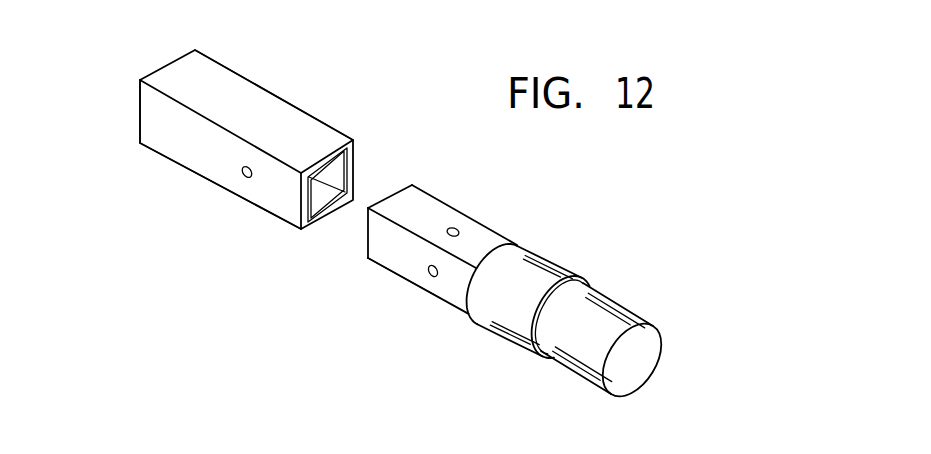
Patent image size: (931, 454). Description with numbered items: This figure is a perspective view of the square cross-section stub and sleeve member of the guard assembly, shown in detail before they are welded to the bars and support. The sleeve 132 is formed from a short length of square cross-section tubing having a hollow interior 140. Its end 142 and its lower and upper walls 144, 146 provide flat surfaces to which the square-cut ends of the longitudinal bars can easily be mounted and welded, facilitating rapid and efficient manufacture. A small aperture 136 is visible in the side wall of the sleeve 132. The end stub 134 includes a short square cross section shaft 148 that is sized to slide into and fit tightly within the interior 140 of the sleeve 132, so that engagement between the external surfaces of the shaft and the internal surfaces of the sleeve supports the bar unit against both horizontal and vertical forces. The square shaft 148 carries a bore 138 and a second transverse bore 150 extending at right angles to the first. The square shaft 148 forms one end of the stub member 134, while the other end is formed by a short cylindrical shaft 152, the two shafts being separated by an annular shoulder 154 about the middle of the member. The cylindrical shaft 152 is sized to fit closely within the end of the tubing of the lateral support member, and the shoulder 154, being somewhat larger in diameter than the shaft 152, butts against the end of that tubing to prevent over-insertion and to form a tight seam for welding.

The sleeve 132 is at (248, 137).
The end stub 134 is at (513, 285).
The aperture in tube side wall 136 is at (241, 177).
The bore 138 is at (432, 280).
The hollow interior 140 is at (335, 179).
The end 142 is at (140, 110).
The lower wall 144 is at (170, 158).
The upper wall 146 is at (233, 90).
The square cross section shaft 148 is at (400, 270).
The second transverse bore 150 is at (461, 233).
The cylindrical shaft 152 is at (610, 308).
The annular shoulder 154 is at (495, 330).